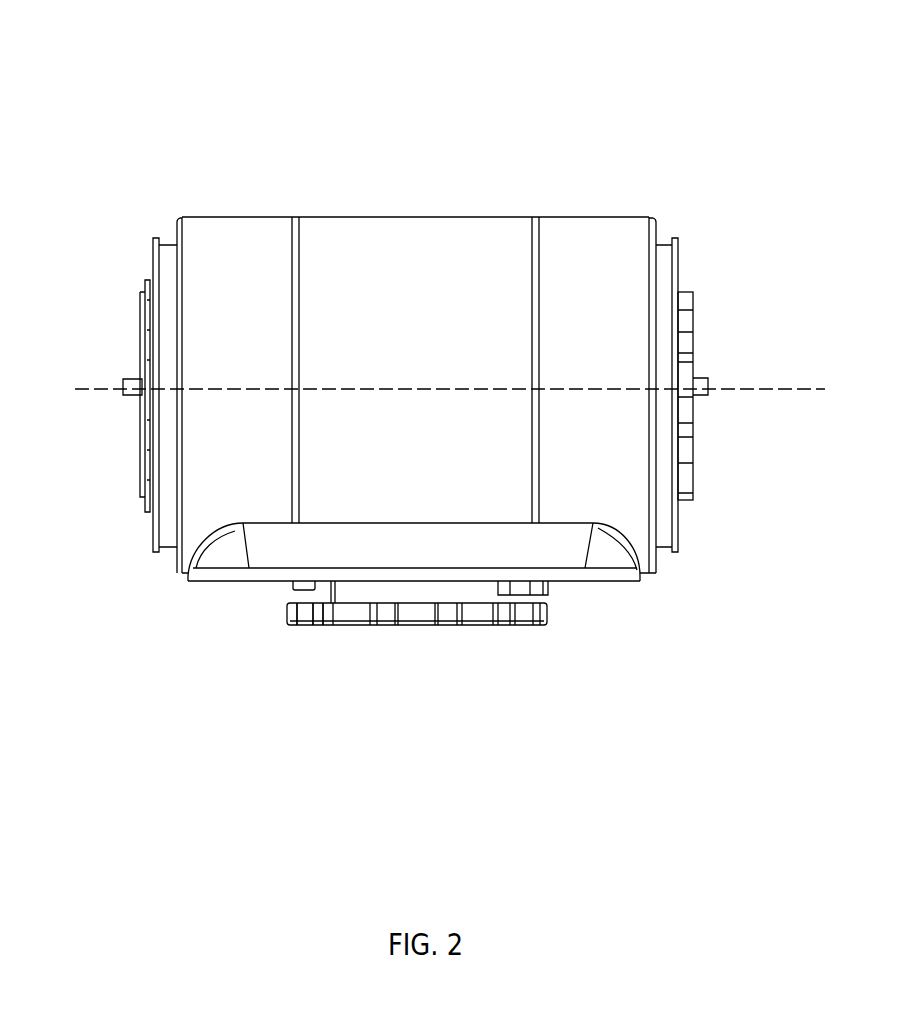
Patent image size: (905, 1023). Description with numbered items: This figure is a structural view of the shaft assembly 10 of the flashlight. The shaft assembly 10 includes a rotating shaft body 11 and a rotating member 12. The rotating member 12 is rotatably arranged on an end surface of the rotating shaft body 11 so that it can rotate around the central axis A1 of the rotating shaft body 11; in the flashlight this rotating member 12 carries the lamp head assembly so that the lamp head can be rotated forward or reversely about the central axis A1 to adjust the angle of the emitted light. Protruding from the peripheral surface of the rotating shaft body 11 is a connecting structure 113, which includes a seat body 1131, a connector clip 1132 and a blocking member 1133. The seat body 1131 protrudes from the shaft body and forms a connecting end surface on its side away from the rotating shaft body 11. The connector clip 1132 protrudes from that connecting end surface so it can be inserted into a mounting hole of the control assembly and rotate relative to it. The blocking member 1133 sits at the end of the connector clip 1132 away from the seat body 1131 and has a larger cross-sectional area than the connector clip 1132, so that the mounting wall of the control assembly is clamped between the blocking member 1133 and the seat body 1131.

The shaft assembly 10 is at (455, 70).
The rotating shaft body 11 is at (420, 283).
The rotating member 12 is at (686, 292).
The connecting structure 113 is at (663, 757).
The seat body 1131 is at (533, 550).
The connector clip 1132 is at (412, 590).
The blocking member 1133 is at (343, 613).
The central axis A1 is at (434, 358).